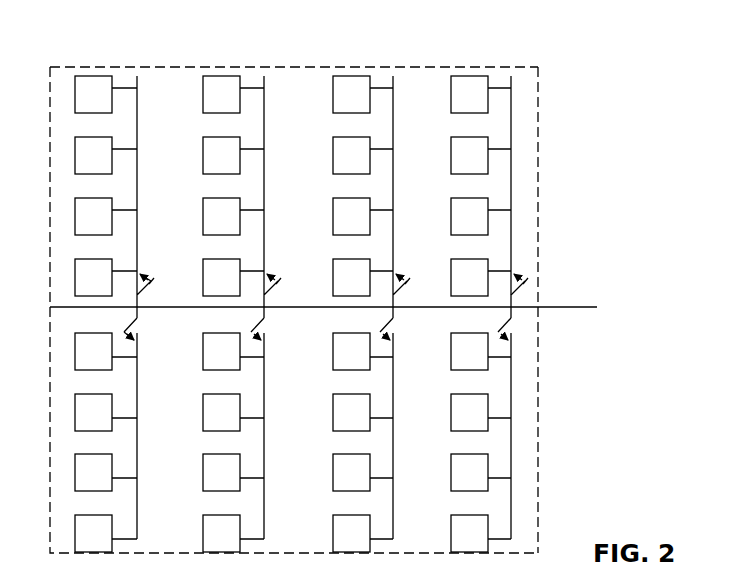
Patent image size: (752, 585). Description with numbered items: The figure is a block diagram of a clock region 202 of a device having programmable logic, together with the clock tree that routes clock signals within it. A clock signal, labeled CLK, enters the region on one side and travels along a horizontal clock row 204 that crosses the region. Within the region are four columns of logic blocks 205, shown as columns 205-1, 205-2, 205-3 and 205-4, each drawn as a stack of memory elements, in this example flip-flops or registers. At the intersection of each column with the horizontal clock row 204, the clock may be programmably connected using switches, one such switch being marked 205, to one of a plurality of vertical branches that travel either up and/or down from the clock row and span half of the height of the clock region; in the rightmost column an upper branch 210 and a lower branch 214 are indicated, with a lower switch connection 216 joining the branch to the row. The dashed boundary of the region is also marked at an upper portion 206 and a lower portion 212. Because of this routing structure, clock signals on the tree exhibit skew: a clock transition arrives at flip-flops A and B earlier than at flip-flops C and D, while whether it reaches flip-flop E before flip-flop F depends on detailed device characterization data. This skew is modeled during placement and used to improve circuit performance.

The clock region 202 is at (547, 126).
The horizontal clock row 204 is at (549, 306).
The column of logic blocks 205 is at (524, 276).
The first column of logic blocks 205-1 is at (124, 70).
The second column of logic blocks 205-2 is at (255, 70).
The third column of logic blocks 205-3 is at (379, 70).
The fourth column of logic blocks 205-4 is at (517, 285).
The upper region boundary 206 is at (539, 197).
The upper local clock bus 210 is at (513, 246).
The lower region boundary 212 is at (539, 465).
The lower local clock bus 214 is at (512, 395).
The lower switch 216 is at (521, 335).